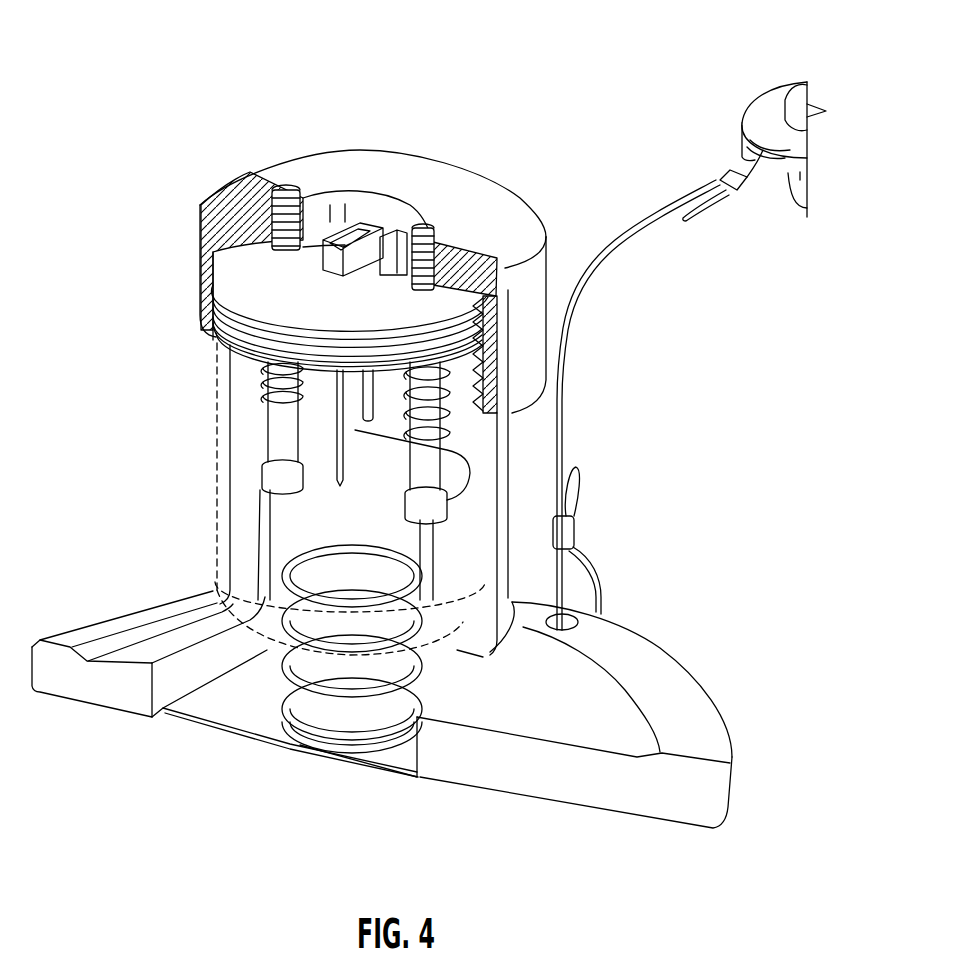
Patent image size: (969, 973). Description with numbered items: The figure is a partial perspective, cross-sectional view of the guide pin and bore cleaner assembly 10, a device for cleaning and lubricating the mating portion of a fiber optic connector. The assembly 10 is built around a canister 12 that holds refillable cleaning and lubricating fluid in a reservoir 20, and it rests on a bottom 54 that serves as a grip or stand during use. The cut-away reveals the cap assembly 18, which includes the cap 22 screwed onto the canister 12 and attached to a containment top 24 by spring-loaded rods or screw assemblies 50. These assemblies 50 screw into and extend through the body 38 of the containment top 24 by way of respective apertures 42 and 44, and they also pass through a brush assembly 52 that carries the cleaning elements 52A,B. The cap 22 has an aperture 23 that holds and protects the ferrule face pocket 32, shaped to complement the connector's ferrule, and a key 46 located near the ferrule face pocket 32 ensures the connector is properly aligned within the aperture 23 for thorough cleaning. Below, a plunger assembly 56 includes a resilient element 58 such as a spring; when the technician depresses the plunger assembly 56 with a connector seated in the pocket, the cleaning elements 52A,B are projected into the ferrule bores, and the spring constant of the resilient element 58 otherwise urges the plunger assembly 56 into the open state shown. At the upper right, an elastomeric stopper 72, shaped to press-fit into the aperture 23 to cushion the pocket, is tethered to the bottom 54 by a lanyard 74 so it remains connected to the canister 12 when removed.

The guide pin and bore cleaner assembly 10 is at (116, 86).
The canister 12 is at (512, 490).
The cap assembly 18 is at (178, 282).
The reservoir 20 is at (327, 522).
The cap 22 is at (273, 165).
The aperture 23 is at (350, 205).
The containment top 24 is at (275, 281).
The ferrule face pocket 32 is at (378, 225).
The body 38 is at (258, 325).
The aperture 42 is at (245, 185).
The aperture 44 is at (480, 243).
The key 46 is at (390, 222).
The spring-loaded rods or screw assemblies 50 is at (273, 433).
The brush assembly 52 is at (372, 455).
The cleaning elements 52A,B is at (330, 457).
The bottom 54 is at (700, 678).
The plunger assembly 56 is at (370, 780).
The resilient element 58 is at (308, 753).
The stopper 72 is at (747, 110).
The lanyard 74 is at (565, 386).